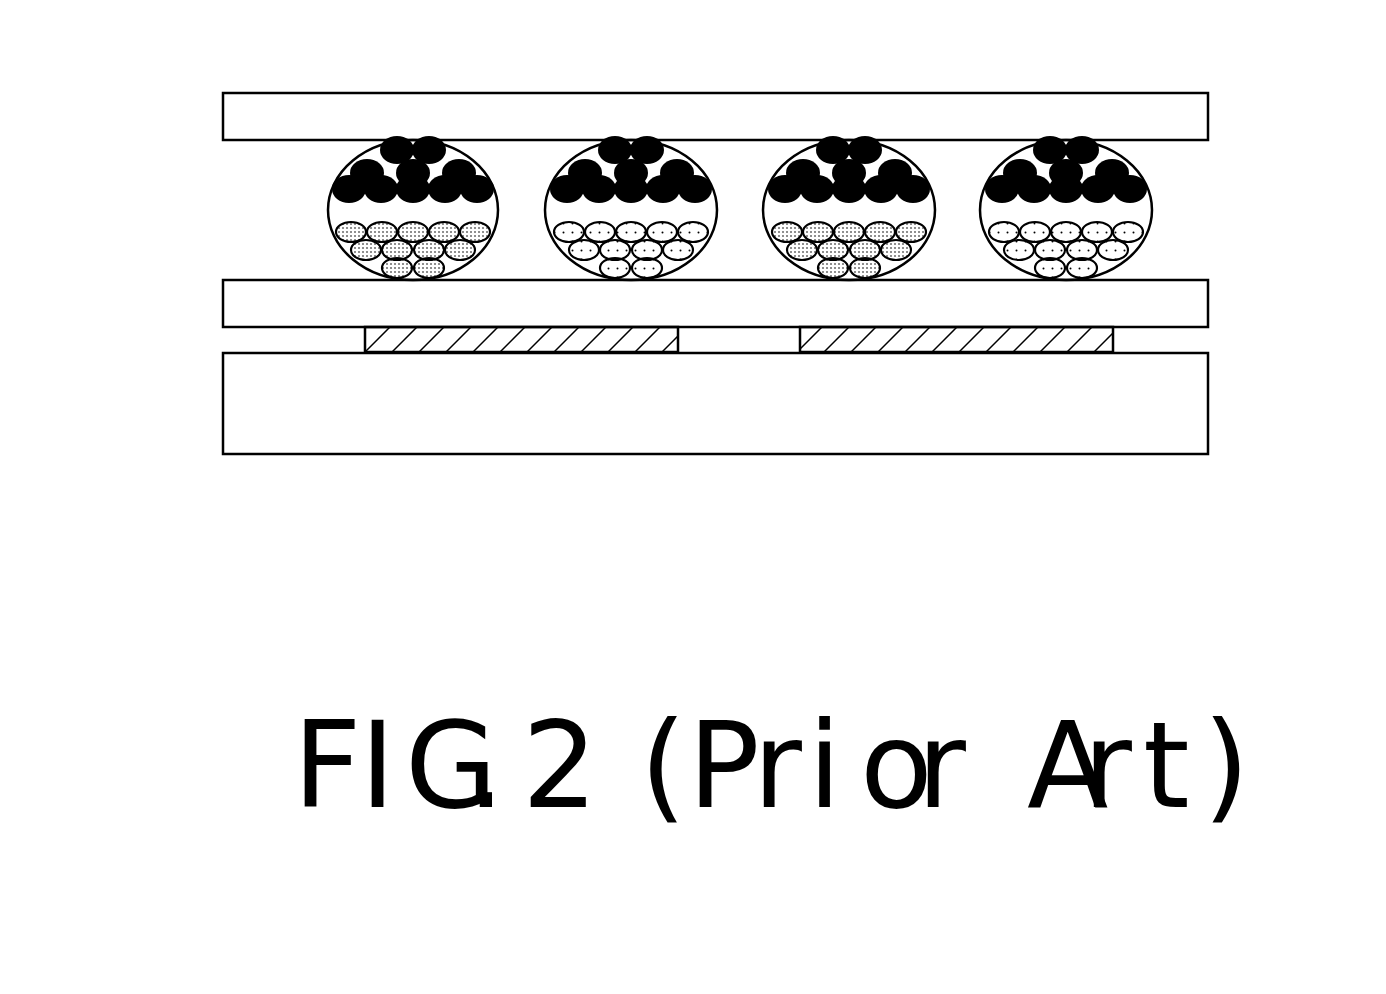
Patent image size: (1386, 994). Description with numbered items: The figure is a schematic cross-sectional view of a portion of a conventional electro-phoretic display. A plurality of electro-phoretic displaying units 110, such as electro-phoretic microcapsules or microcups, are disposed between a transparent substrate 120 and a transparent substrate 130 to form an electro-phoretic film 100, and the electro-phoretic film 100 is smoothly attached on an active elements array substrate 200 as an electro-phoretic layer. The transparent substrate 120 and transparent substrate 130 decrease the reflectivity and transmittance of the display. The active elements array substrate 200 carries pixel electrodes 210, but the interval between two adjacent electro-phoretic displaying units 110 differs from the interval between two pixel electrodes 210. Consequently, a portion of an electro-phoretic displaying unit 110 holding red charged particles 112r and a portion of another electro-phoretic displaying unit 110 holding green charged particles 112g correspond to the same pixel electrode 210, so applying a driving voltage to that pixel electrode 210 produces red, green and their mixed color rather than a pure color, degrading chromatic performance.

The electro-phoretic film 100 is at (193, 93).
The electro-phoretic displaying unit 110 is at (805, 347).
The red charged particles 112r is at (832, 272).
The green charged particles 112g is at (1085, 272).
The transparent substrate 120 is at (1193, 307).
The transparent substrate 130 is at (1193, 123).
The active elements array substrate 200 is at (1193, 408).
The pixel electrode 210 is at (605, 343).